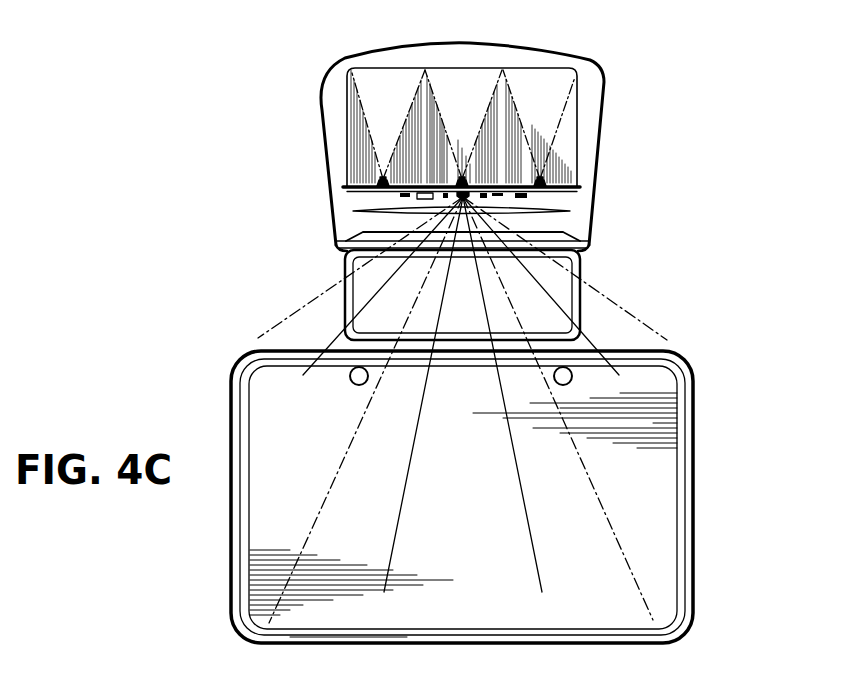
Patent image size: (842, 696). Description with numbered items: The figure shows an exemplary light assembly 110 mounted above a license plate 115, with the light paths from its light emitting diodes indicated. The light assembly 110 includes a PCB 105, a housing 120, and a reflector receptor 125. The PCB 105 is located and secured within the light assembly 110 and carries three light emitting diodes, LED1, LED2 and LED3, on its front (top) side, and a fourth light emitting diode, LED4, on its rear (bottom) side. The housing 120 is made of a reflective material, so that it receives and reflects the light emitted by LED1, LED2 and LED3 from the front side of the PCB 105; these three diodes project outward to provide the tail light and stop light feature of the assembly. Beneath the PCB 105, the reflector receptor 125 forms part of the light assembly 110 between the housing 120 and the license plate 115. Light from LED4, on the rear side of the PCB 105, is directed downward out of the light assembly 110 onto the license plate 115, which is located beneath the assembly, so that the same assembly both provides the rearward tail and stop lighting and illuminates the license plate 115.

The light assembly 110 is at (315, 53).
The housing 120 is at (605, 97).
The PCB 105 is at (562, 189).
The element LED1 is at (541, 178).
The element LED2 is at (462, 178).
The element LED3 is at (383, 178).
The element LED4 is at (467, 196).
The reflector receptor 125 is at (345, 302).
The license plate 115 is at (660, 512).